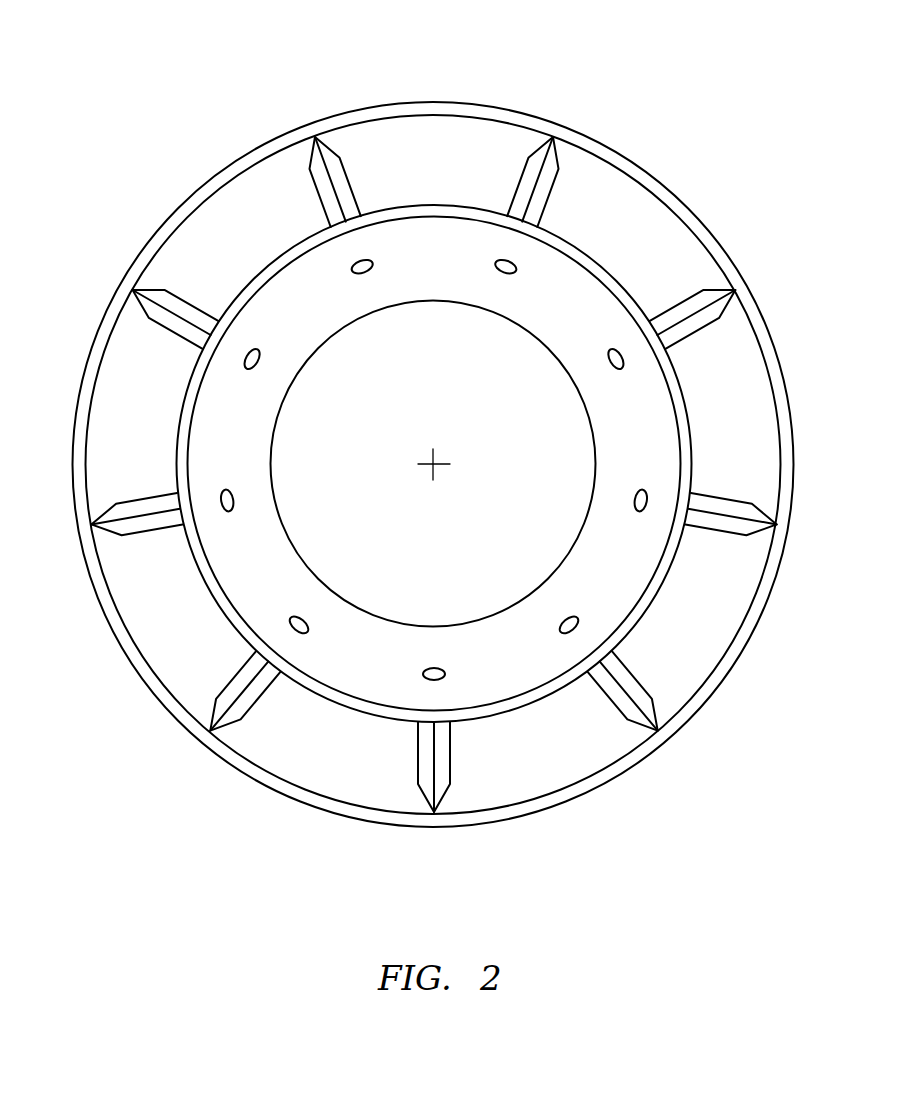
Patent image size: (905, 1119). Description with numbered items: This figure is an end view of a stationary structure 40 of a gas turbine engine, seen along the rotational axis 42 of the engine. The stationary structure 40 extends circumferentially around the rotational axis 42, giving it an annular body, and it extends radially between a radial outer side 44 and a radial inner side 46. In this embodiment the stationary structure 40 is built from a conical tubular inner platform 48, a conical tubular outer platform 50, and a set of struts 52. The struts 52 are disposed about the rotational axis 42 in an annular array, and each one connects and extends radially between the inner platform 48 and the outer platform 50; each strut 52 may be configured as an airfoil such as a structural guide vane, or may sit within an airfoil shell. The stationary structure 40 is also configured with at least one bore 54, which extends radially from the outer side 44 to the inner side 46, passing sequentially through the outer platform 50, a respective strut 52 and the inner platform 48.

The stationary structure 40 is at (678, 72).
The rotational axis 42 is at (434, 467).
The radial outer side 44 is at (456, 101).
The radial inner side 46 is at (432, 216).
The tubular inner platform 48 is at (550, 342).
The tubular outer platform 50 is at (676, 192).
The struts 52 is at (310, 160).
The bore 54 is at (306, 608).